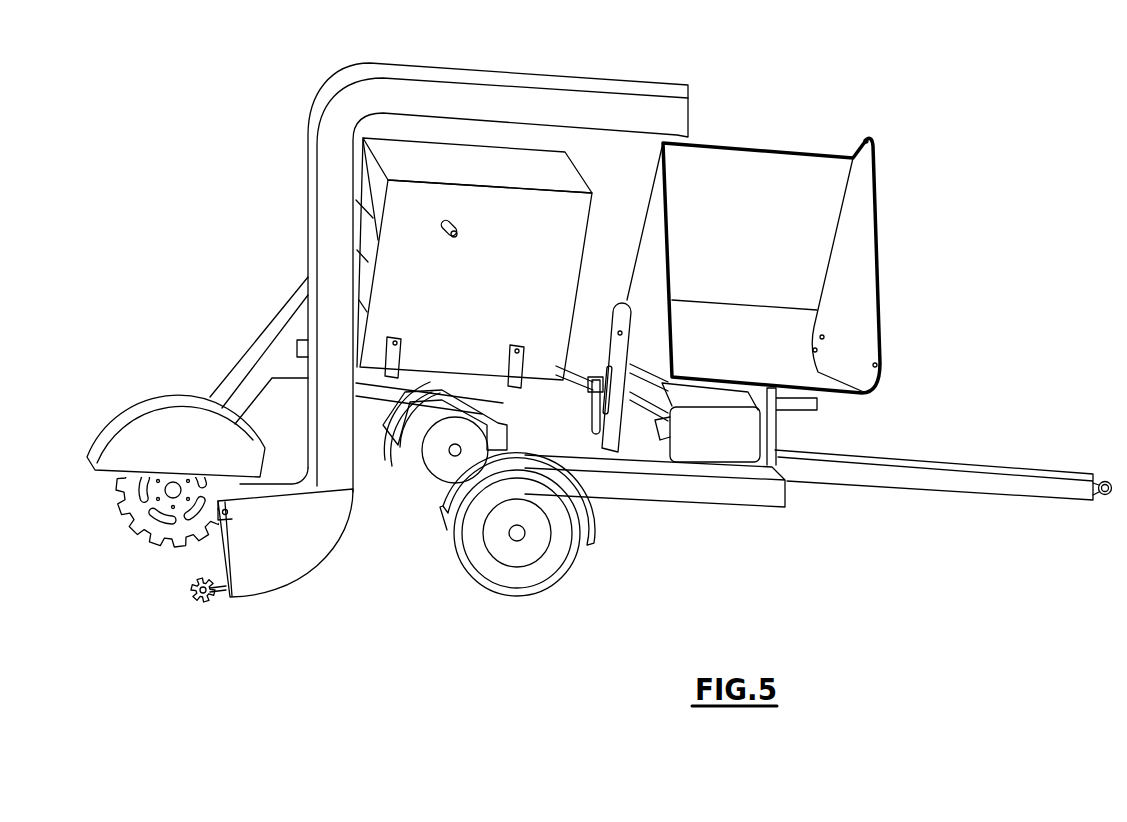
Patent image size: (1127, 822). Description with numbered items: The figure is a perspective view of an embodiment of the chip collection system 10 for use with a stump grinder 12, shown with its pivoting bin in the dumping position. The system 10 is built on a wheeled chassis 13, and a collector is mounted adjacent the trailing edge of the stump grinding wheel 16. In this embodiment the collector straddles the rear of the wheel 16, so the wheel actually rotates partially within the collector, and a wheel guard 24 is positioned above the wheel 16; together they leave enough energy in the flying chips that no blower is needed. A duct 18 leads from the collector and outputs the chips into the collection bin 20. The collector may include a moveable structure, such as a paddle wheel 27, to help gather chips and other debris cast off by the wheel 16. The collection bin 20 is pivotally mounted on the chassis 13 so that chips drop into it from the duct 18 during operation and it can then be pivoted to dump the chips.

The chip collection system 10 is at (226, 200).
The stump grinder 12 is at (498, 301).
The wheeled chassis 13 is at (447, 507).
The stump grinding wheel 16 is at (163, 550).
The duct 18 is at (484, 78).
The collection bin 20 is at (775, 170).
The wheel guard 24 is at (172, 420).
The paddle wheel 27 is at (198, 610).